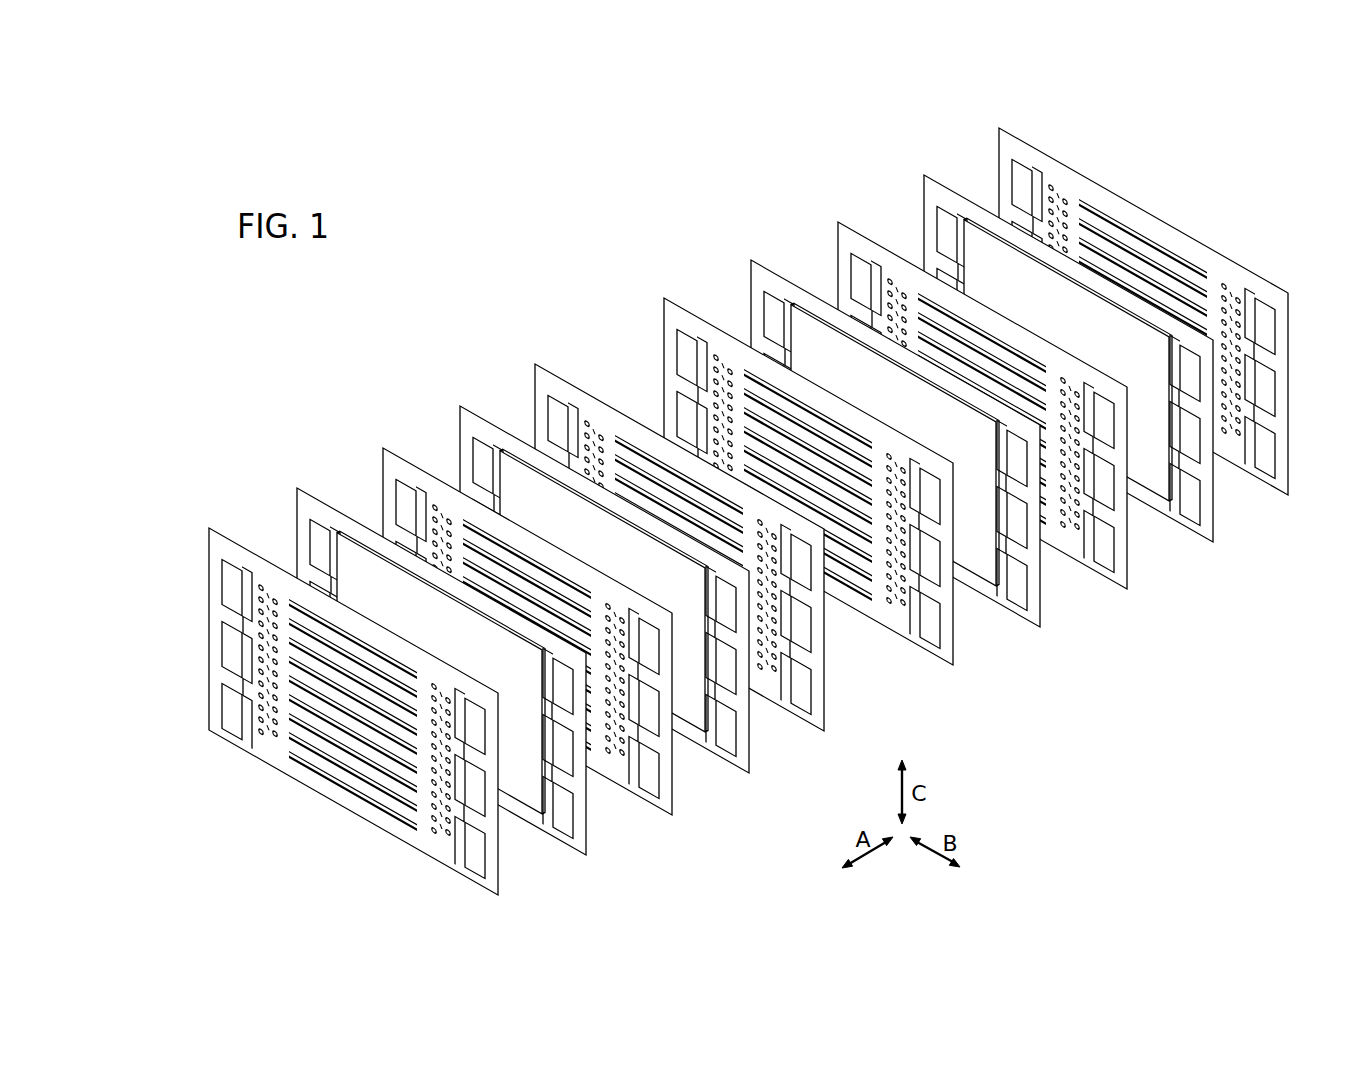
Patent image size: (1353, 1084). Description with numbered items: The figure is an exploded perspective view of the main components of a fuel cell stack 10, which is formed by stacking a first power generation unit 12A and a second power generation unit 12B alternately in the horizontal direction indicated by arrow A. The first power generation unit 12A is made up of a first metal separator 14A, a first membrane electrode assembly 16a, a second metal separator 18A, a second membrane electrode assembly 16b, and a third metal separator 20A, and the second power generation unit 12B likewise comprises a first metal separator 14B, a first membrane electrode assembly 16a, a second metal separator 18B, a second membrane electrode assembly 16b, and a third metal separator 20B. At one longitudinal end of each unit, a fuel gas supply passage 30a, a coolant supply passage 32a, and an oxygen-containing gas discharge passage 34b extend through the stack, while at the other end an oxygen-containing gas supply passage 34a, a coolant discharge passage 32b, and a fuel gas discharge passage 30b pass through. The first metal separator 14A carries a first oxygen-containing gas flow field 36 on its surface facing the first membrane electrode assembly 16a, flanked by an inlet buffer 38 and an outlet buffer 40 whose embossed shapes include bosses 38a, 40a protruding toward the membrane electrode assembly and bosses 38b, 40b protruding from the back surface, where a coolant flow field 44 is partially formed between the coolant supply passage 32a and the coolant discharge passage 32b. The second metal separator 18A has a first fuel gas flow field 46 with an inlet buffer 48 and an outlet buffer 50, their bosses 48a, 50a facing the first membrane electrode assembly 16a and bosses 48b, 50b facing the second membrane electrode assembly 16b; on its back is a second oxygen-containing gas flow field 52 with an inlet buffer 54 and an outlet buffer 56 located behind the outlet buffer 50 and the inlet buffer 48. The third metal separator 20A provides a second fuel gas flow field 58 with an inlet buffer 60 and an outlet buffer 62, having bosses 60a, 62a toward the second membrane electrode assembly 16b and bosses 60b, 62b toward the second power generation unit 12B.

The fuel cell stack 10 is at (444, 216).
The first power generation unit 12A is at (721, 514).
The second power generation unit 12B is at (1005, 437).
The first metal separator 14A is at (540, 571).
The first metal separator 14B is at (842, 509).
The first membrane electrode assembly 16a is at (293, 483).
The second membrane electrode assembly 16b is at (457, 402).
The second metal separator 18A is at (725, 515).
The second metal separator 18B is at (1132, 592).
The third metal separator 20A is at (885, 462).
The third metal separator 20B is at (1292, 500).
The fuel gas supply passage 30a is at (227, 573).
The fuel gas discharge passage 30b is at (478, 850).
The coolant supply passage 32a is at (227, 630).
The coolant discharge passage 32b is at (478, 783).
The oxygen-containing gas supply passage 34a is at (478, 729).
The oxygen-containing gas discharge passage 34b is at (227, 695).
The first oxygen-containing gas flow field 36 is at (347, 717).
The inlet buffer 38 is at (666, 757).
The bosses 38a is at (460, 702).
The bosses 38b is at (428, 680).
The outlet buffer 40 is at (485, 490).
The bosses 40a is at (247, 577).
The bosses 40b is at (497, 510).
The coolant flow field 44 is at (322, 748).
The first fuel gas flow field 46 is at (757, 511).
The inlet buffer 48 is at (614, 413).
The bosses 48a is at (445, 507).
The bosses 48b is at (404, 500).
The outlet buffer 50 is at (870, 589).
The bosses 50a is at (612, 607).
The bosses 50b is at (631, 612).
The second oxygen-containing gas flow field 52 is at (498, 557).
The inlet buffer 54 is at (870, 589).
The outlet buffer 56 is at (614, 413).
The second fuel gas flow field 58 is at (652, 468).
The inlet buffer 60 is at (856, 352).
The bosses 60a is at (584, 412).
The bosses 60b is at (603, 420).
The outlet buffer 62 is at (1026, 501).
The bosses 62a is at (787, 678).
The bosses 62b is at (766, 674).